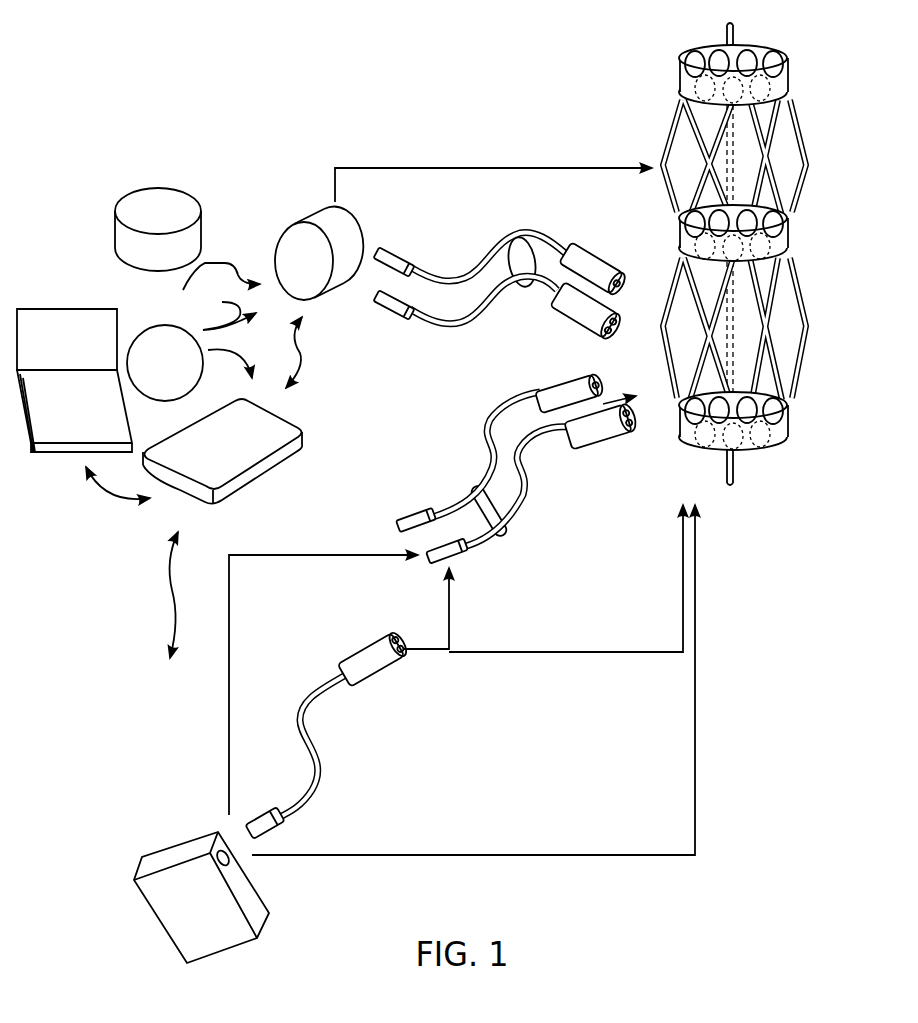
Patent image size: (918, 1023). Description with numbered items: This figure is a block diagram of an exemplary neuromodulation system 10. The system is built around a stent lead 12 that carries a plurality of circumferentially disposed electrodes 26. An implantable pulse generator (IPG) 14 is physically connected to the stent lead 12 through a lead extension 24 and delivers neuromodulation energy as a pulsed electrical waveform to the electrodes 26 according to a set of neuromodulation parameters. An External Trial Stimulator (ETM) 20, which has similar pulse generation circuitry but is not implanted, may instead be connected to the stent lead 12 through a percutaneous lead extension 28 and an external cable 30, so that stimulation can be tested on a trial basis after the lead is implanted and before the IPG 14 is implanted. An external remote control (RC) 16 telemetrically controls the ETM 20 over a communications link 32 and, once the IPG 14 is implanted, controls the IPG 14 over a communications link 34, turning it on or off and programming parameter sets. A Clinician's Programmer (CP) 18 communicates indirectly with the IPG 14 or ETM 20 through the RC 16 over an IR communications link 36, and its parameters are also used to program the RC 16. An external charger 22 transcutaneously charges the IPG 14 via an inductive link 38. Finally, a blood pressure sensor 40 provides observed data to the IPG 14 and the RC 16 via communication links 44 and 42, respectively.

The neuromodulation system 10 is at (476, 110).
The stent lead 12 is at (758, 468).
The implantable pulse generator (IPG) 14 is at (302, 221).
The external remote control (RC) 16 is at (262, 452).
The Clinician's Programmer (CP) 18 is at (53, 322).
The External Trial Stimulator (ETM) 20 is at (176, 852).
The external charger 22 is at (160, 193).
The lead extension 24 is at (516, 237).
The electrodes 26 is at (652, 318).
The percutaneous lead extension 28 is at (472, 490).
The external cable 30 is at (323, 686).
The communications link 32 is at (171, 614).
The communications link 34 is at (298, 363).
The IR communications link 36 is at (110, 495).
The inductive link 38 is at (207, 282).
The blood pressure sensor 40 is at (147, 337).
The communication link 42 is at (246, 350).
The communication link 44 is at (225, 310).